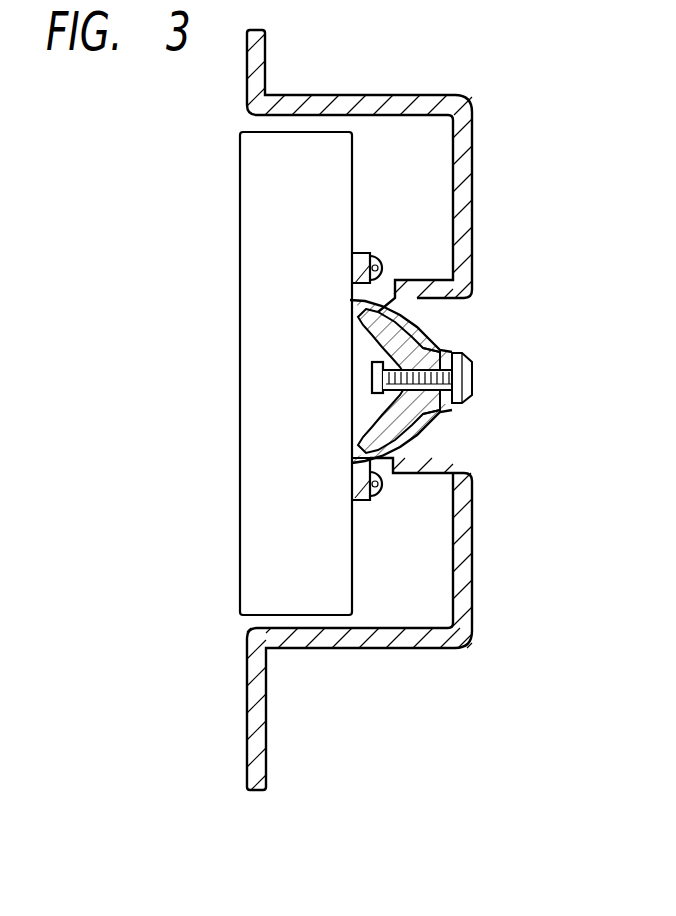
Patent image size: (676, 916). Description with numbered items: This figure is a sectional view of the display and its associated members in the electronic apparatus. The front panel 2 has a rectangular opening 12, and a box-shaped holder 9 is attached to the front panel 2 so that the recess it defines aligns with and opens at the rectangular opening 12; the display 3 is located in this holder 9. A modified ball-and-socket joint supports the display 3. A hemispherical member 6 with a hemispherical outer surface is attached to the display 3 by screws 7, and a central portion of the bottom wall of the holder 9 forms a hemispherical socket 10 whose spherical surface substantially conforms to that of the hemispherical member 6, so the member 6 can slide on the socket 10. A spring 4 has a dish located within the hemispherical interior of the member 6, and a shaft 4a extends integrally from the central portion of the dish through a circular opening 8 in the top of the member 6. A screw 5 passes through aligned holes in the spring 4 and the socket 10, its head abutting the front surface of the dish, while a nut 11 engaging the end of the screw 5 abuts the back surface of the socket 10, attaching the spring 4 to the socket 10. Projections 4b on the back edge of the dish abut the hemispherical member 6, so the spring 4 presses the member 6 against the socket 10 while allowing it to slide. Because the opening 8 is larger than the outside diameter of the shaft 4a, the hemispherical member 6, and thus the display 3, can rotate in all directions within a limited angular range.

The front panel 2 is at (252, 83).
The display 3 is at (242, 188).
The spring 4 is at (360, 384).
The shaft 4a is at (442, 412).
The projections 4b is at (432, 435).
The screw 5 is at (372, 382).
The hemispherical member 6 is at (363, 258).
The screws 7 is at (382, 268).
The circular opening 8 is at (443, 332).
The holder 9 is at (351, 410).
The hemispherical socket 10 is at (430, 427).
The nut 11 is at (472, 363).
The rectangular opening 12 is at (248, 637).